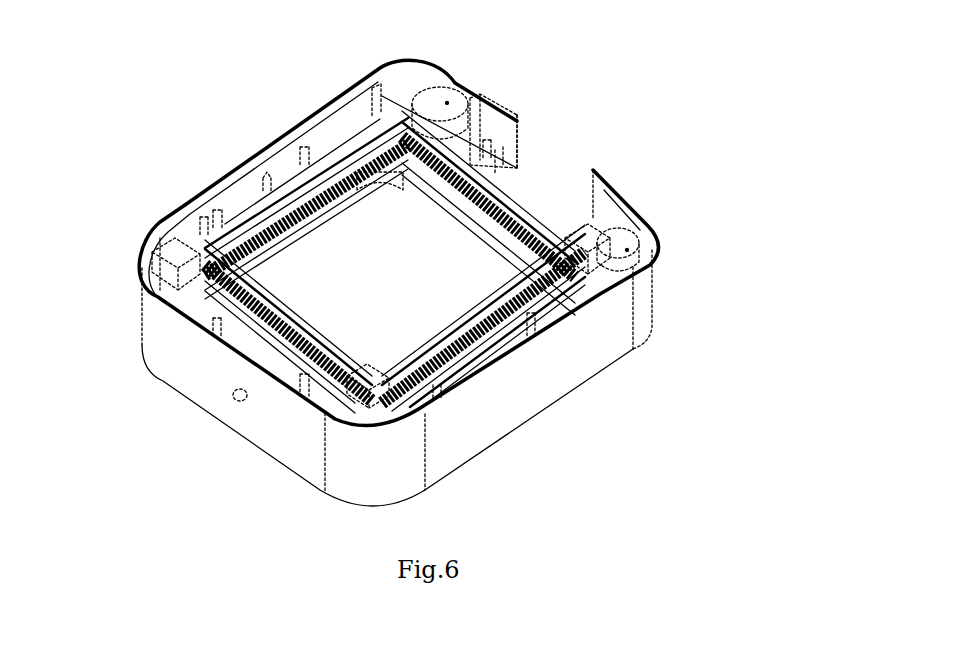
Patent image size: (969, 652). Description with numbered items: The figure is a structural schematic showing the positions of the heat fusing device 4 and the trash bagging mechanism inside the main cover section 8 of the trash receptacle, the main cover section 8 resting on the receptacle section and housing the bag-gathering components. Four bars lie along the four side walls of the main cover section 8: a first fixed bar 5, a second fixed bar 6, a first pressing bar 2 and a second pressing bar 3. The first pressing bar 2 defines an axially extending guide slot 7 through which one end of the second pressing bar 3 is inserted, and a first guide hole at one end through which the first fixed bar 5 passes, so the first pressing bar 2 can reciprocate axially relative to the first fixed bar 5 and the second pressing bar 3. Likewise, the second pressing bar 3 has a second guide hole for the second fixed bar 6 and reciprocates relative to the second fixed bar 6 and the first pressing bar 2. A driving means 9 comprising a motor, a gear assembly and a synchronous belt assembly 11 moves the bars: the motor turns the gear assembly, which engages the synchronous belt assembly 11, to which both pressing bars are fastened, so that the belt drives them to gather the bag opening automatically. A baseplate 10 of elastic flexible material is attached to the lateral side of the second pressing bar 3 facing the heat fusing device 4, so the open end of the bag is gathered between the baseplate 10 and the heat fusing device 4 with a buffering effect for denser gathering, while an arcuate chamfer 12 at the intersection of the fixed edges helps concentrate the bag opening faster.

The first pressing bar 2 is at (545, 318).
The second pressing bar 3 is at (170, 247).
The heat fusing device 4 is at (367, 83).
The first fixed bar 5 is at (610, 280).
The second fixed bar 6 is at (357, 138).
The guide slot 7 is at (500, 368).
The main cover section 8 is at (202, 490).
The driving means 9 is at (447, 103).
The baseplate 10 is at (247, 279).
The synchronous belt assembly 11 is at (307, 193).
The arcuate chamfer 12 is at (440, 137).